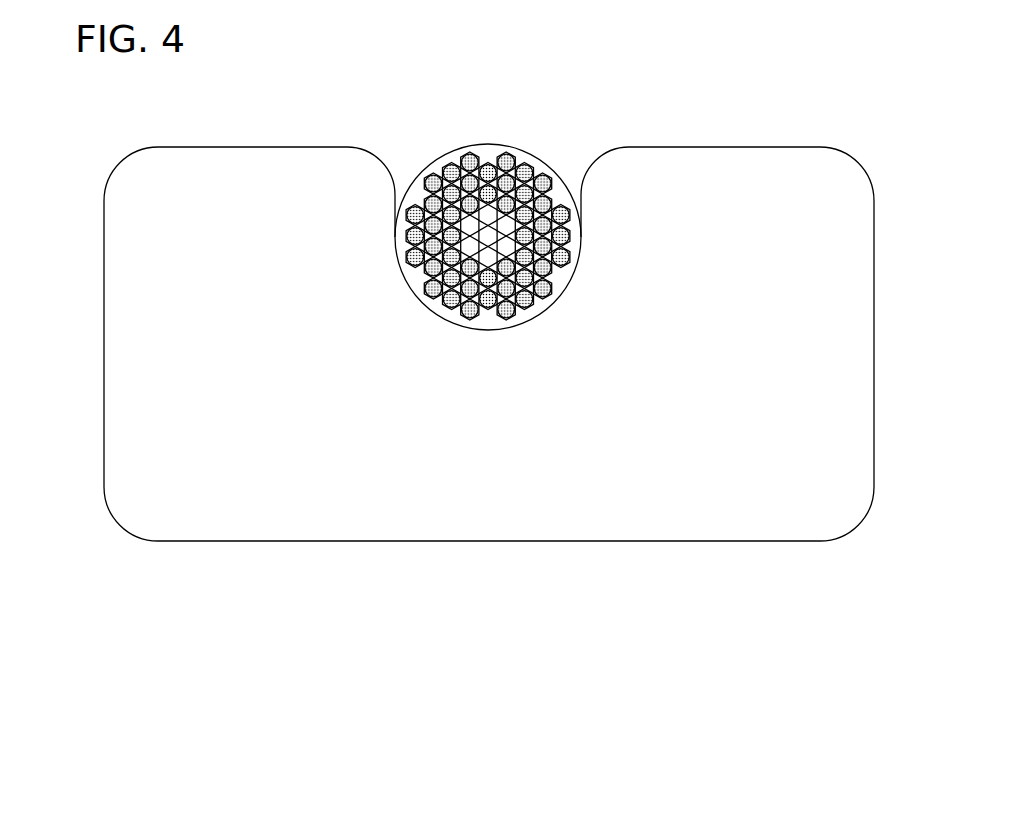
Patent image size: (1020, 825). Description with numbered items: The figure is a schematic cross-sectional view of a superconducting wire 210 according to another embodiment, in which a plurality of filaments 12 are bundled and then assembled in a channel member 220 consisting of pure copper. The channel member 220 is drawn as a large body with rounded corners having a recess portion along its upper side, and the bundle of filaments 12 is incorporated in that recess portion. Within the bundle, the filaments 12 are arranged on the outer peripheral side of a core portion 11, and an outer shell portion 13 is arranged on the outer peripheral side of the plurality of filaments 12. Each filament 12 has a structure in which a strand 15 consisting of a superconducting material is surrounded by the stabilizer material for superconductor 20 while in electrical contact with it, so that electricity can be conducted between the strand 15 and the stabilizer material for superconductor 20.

The core portion 11 is at (470, 253).
The filament 12 is at (496, 146).
The outer shell portion 13 is at (412, 196).
The strand 15 is at (563, 216).
The stabilizer material for superconductor 20 is at (570, 235).
The superconducting wire 210 is at (278, 574).
The channel member 220 is at (660, 510).